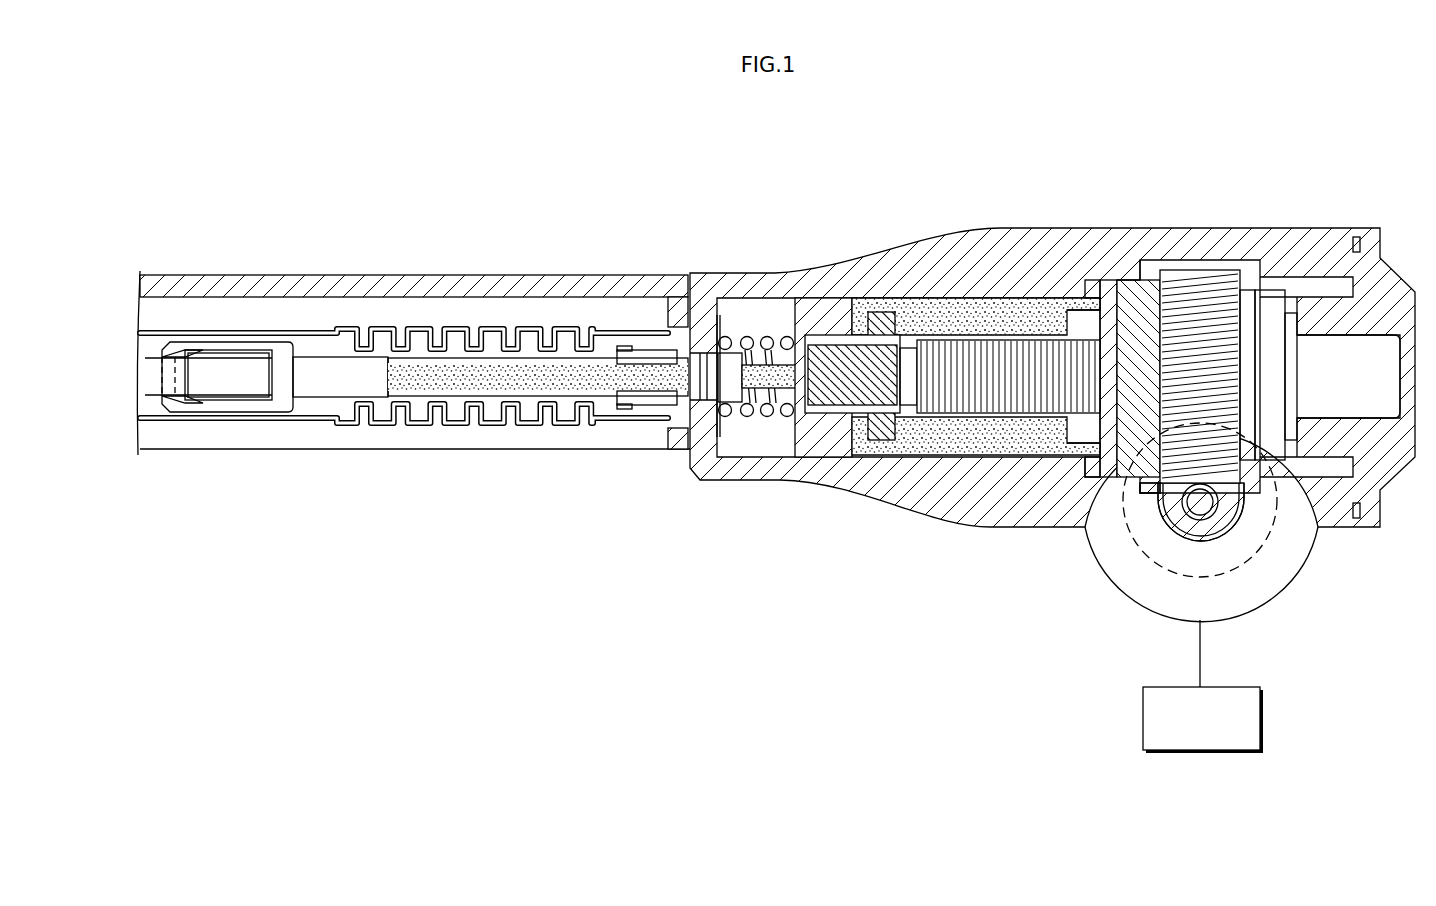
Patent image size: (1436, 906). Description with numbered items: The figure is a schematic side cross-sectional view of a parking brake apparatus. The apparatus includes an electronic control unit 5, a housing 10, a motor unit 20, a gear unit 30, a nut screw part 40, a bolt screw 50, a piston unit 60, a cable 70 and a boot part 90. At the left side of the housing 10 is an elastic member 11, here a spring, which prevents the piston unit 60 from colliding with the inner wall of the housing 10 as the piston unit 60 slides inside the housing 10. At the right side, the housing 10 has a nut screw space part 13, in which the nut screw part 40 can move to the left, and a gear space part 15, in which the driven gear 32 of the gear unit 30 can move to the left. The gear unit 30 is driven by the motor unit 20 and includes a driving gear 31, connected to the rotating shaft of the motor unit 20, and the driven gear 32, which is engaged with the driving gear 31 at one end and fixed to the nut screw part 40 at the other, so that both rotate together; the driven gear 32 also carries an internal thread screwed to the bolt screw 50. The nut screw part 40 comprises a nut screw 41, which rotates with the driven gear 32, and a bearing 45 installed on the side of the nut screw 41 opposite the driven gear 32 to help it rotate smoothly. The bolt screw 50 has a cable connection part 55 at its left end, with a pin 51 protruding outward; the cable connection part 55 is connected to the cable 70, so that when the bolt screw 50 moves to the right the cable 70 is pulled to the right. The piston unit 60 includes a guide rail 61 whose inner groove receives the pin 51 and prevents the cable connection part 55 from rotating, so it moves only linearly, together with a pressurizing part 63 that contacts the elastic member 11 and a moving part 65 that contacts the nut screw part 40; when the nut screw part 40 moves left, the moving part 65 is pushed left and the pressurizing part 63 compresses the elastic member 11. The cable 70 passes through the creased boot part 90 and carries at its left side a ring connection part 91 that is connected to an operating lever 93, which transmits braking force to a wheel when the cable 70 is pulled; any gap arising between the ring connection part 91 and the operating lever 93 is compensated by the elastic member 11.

The electronic control unit 5 is at (1143, 717).
The housing 10 is at (933, 507).
The elastic member 11 is at (745, 412).
The nut screw space part 13 is at (1085, 468).
The gear space part 15 is at (1148, 492).
The motor unit 20 is at (1228, 573).
The gear unit 30 is at (1275, 543).
The driving gear 31 is at (1227, 573).
The driven gear 32 is at (1237, 427).
The nut screw part 40 is at (1170, 309).
The nut screw 41 is at (1148, 313).
The bearing 45 is at (1108, 283).
The bolt screw 50 is at (975, 413).
The pin 51 is at (880, 440).
The cable connection part 55 is at (815, 388).
The piston unit 60 is at (951, 287).
The guide rail 61 is at (973, 317).
The pressurizing part 63 is at (825, 313).
The moving part 65 is at (1085, 302).
The cable 70 is at (563, 375).
The boot part 90 is at (458, 423).
The ring connection part 91 is at (283, 402).
The operating lever 93 is at (216, 387).